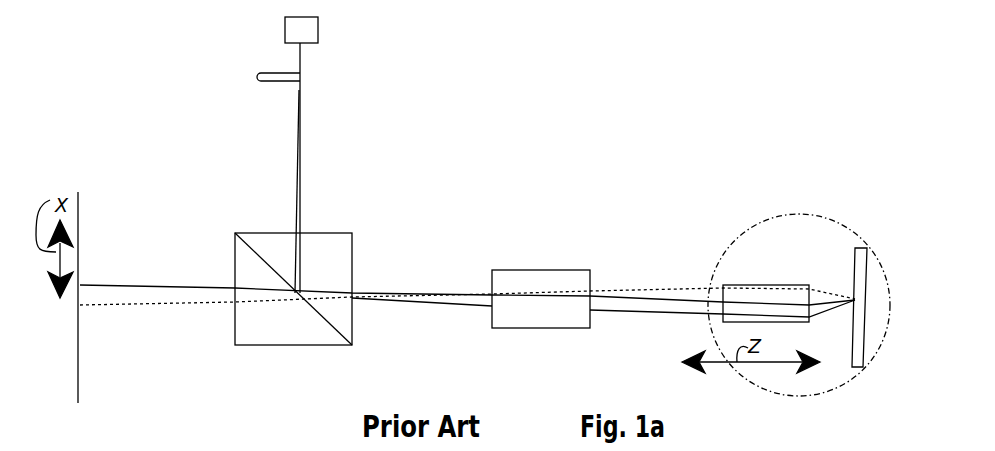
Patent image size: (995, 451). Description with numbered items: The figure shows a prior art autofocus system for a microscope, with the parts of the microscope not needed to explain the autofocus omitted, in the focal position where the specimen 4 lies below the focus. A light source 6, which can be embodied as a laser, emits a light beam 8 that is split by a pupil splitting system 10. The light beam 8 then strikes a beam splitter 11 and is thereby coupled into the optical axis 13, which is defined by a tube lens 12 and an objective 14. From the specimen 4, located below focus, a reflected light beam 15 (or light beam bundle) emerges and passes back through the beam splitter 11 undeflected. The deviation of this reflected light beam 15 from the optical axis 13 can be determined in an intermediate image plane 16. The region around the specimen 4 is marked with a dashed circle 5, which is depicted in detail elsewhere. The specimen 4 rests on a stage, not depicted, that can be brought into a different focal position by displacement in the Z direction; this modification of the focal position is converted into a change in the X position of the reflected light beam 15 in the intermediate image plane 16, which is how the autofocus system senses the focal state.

The specimen 4 is at (855, 272).
The dashed circle 5 is at (743, 235).
The light source 6 is at (285, 33).
The light beam 8 is at (301, 57).
The pupil splitting system 10 is at (257, 76).
The beam splitter 11 is at (235, 240).
The tube lens 12 is at (511, 272).
The optical axis 13 is at (131, 285).
The objective 14 is at (755, 287).
The reflected light beam 15 is at (220, 305).
The intermediate image plane 16 is at (78, 223).